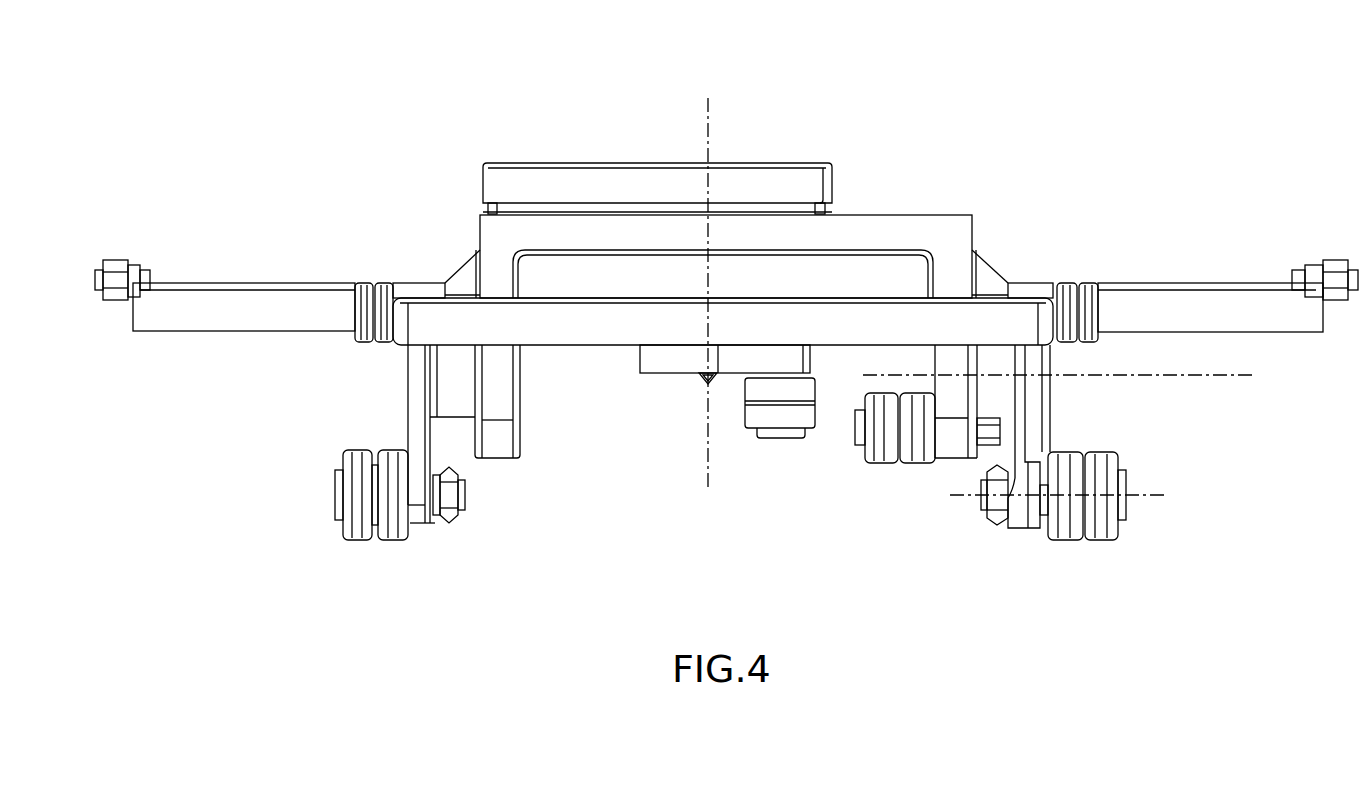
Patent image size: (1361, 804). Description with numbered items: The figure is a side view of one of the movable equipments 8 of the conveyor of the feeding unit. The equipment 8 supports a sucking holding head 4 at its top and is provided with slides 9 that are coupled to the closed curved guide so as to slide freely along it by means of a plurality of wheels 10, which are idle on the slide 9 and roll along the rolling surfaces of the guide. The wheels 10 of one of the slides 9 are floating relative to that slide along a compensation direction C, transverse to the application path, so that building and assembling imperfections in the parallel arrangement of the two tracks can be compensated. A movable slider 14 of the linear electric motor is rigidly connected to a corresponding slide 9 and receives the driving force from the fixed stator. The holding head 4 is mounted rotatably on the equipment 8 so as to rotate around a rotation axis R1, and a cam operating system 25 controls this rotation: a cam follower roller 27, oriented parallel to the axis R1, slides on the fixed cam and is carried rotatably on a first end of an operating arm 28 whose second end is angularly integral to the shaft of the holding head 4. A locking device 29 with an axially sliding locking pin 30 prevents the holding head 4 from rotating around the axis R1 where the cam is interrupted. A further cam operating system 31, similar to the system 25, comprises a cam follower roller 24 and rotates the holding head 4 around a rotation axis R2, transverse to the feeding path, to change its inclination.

The holding head 4 is at (600, 178).
The equipment 8 is at (910, 120).
The slide 9 is at (1035, 540).
The wheels 10 is at (378, 283).
The movable slider 14 is at (200, 323).
The cam follower roller 24 is at (880, 455).
The cam operating system 25 is at (665, 445).
The cam follower roller 27 is at (785, 420).
The operating arm 28 is at (640, 363).
The locking device 29 is at (665, 395).
The locking pin 30 is at (712, 384).
The further cam operating system 31 is at (905, 475).
The rotation axis R1 is at (712, 124).
The rotation axis R2 is at (1205, 377).
The compensation direction C is at (1059, 512).